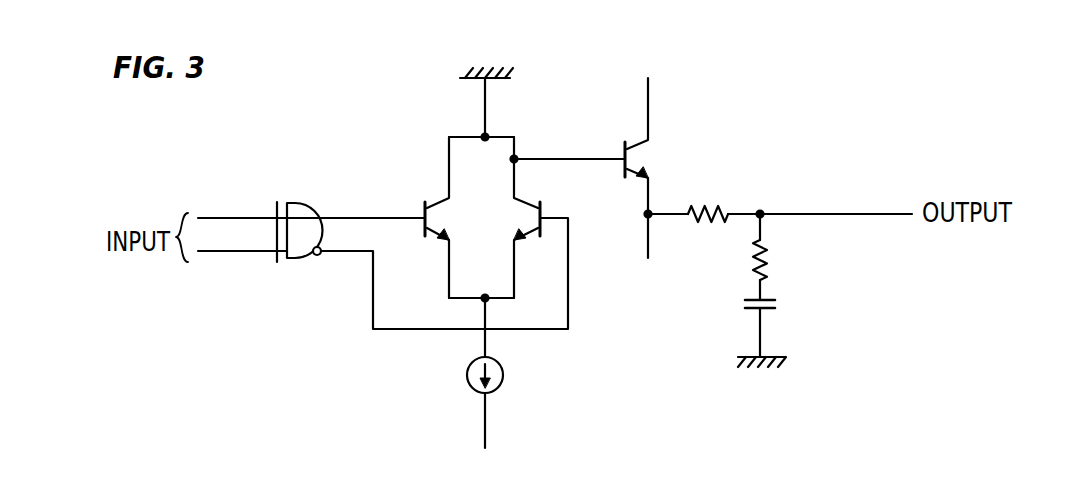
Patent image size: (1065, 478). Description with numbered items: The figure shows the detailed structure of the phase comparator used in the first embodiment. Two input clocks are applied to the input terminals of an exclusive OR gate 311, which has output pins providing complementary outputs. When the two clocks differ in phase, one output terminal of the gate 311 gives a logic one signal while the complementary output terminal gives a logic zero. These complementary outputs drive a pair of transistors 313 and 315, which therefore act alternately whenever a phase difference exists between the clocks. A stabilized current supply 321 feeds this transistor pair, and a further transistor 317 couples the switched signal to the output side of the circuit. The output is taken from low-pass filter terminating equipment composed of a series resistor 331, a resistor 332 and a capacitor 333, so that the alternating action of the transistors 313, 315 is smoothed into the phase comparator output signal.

The exclusive OR gate 311 is at (305, 207).
The transistor 313 is at (422, 209).
The transistor 315 is at (545, 212).
The transistor 317 is at (623, 151).
The stabilized current supply 321 is at (504, 376).
The resistor 331 is at (716, 206).
The resistor 332 is at (768, 258).
The capacitor 333 is at (775, 306).